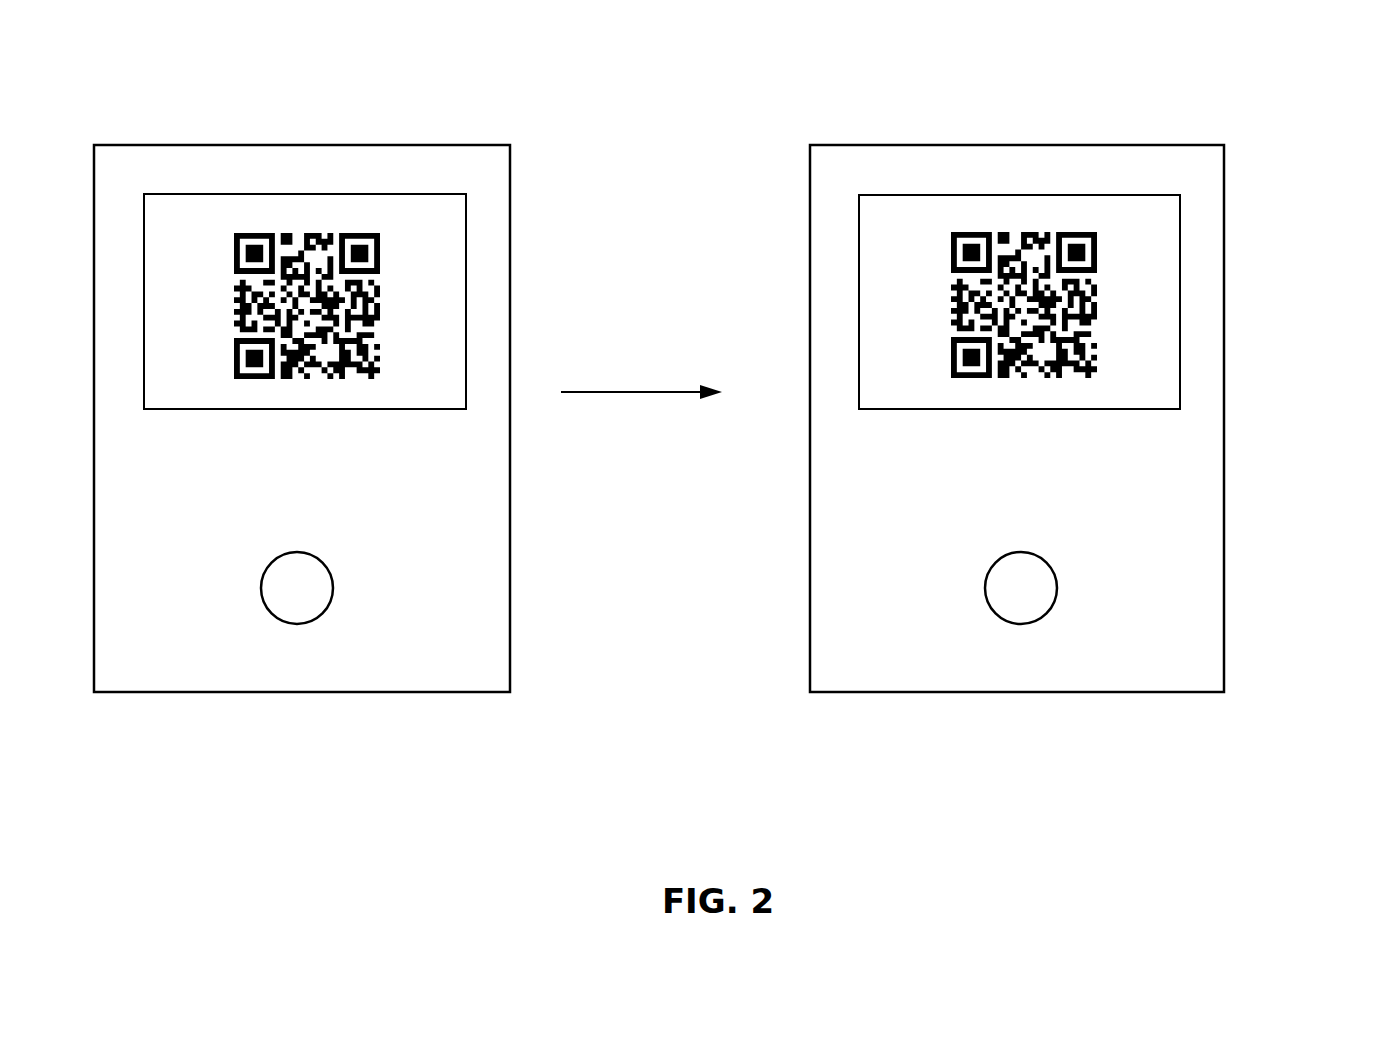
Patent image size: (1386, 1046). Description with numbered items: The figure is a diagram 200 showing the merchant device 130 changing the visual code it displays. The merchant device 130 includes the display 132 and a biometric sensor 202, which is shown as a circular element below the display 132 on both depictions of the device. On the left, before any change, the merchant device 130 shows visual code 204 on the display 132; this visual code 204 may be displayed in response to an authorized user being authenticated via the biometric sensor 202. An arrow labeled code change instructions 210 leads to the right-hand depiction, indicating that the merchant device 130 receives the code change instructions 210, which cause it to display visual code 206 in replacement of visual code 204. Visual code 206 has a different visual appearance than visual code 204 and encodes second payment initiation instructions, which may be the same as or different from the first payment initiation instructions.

The visual code change process 200 is at (1212, 34).
The merchant device 130 is at (138, 145).
The display 132 is at (333, 194).
The biometric sensor 202 is at (297, 603).
The visual code 204 is at (378, 278).
The visual code 206 is at (1092, 283).
The code change instructions 210 is at (641, 351).